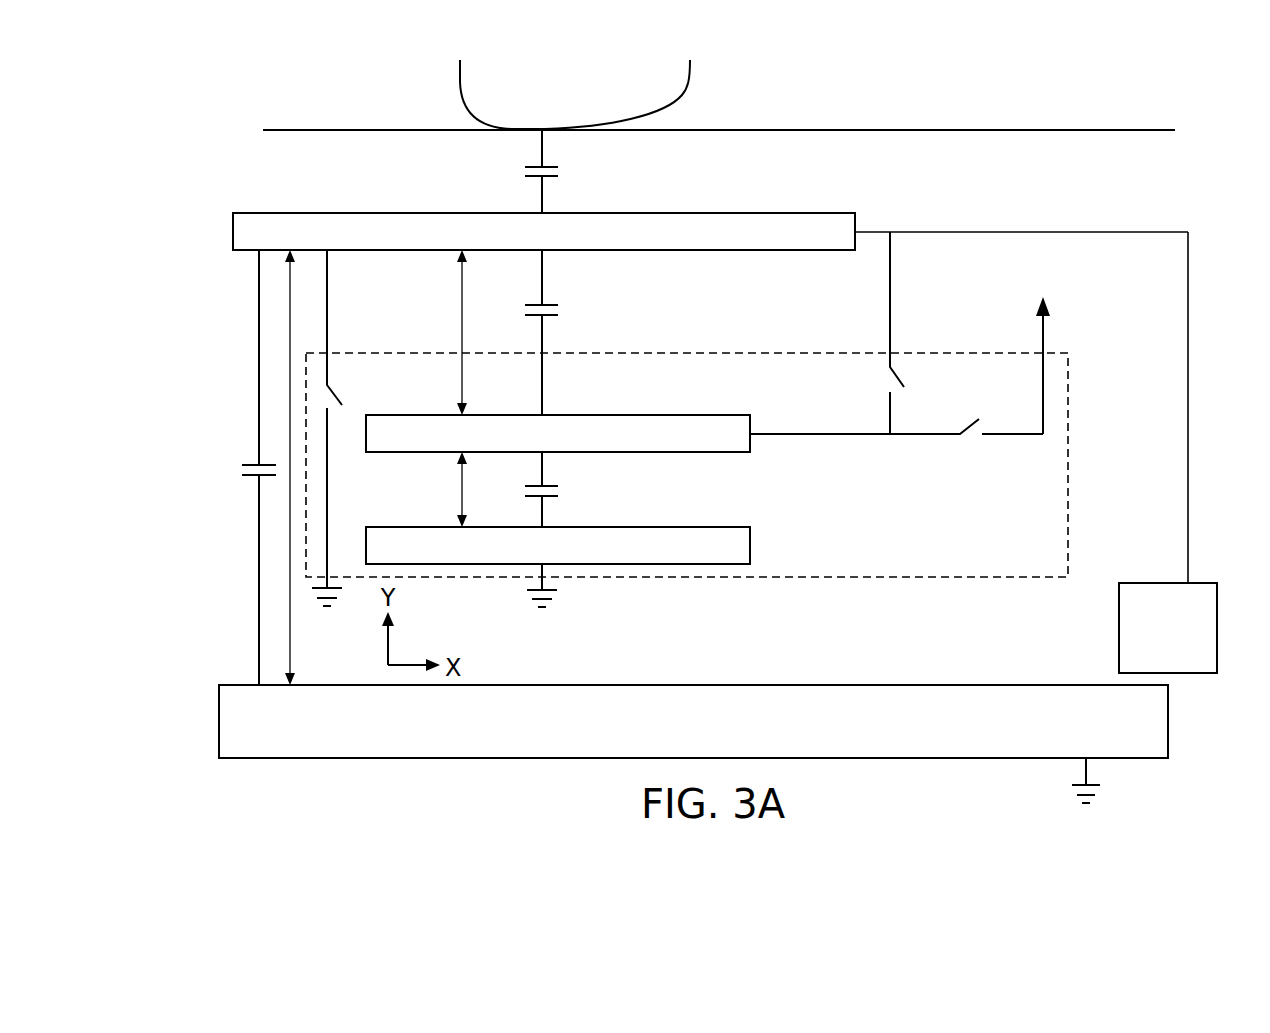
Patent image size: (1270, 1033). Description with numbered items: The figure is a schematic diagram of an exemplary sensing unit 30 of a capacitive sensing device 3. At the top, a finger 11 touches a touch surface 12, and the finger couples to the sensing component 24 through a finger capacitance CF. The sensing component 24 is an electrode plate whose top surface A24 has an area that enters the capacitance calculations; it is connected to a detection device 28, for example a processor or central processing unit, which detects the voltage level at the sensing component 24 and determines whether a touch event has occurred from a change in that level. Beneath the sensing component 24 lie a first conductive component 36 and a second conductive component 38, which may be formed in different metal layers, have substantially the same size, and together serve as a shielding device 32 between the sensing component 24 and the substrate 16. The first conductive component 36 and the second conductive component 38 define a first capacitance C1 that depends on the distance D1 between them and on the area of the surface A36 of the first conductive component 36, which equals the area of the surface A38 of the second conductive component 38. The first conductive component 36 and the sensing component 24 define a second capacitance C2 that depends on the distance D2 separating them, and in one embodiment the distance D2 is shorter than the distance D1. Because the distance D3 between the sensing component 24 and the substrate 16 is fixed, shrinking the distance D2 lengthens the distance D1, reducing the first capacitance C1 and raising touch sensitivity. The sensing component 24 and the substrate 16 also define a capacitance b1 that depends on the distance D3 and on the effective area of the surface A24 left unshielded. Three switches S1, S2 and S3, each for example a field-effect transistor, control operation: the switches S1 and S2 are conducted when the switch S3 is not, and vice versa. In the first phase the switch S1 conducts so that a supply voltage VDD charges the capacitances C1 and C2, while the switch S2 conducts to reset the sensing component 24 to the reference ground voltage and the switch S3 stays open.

The sensing device 3 is at (170, 84).
The finger 11 is at (692, 70).
The touch surface 12 is at (930, 130).
The finger capacitance CF is at (560, 172).
The sensing component 24 is at (840, 245).
The surface of the sensing component A24 is at (713, 250).
The second capacitance C2 is at (560, 310).
The first capacitance C1 is at (560, 490).
The sensing unit 30 is at (384, 326).
The shielding device 32 is at (1068, 407).
The switch S2 is at (343, 385).
The distance D2 is at (445, 332).
The first conductive component 36 is at (738, 446).
The surface of the first conductive component A36 is at (672, 415).
The distance D1 is at (445, 489).
The second conductive component 38 is at (738, 558).
The surface of the second conductive component A38 is at (672, 527).
The switch S3 is at (888, 380).
The switch S1 is at (965, 420).
The supply voltage VDD is at (1041, 352).
The capacitance b1 is at (240, 470).
The distance D3 is at (307, 467).
The detection device 28 is at (1119, 628).
The substrate 16 is at (1154, 740).